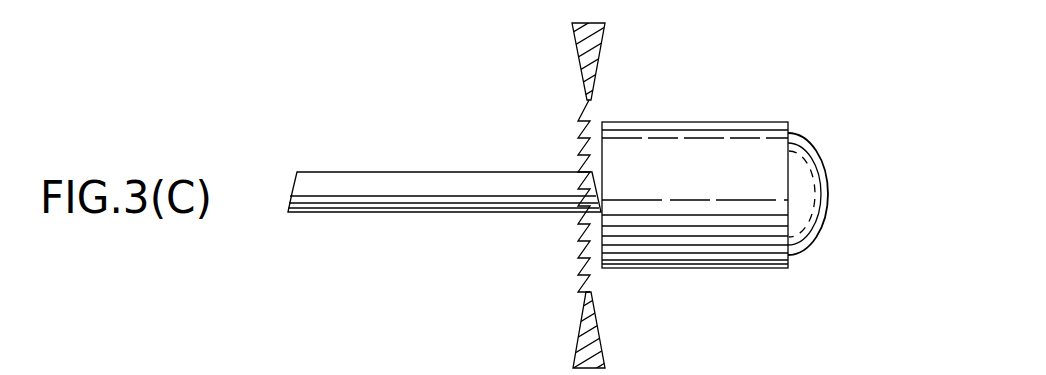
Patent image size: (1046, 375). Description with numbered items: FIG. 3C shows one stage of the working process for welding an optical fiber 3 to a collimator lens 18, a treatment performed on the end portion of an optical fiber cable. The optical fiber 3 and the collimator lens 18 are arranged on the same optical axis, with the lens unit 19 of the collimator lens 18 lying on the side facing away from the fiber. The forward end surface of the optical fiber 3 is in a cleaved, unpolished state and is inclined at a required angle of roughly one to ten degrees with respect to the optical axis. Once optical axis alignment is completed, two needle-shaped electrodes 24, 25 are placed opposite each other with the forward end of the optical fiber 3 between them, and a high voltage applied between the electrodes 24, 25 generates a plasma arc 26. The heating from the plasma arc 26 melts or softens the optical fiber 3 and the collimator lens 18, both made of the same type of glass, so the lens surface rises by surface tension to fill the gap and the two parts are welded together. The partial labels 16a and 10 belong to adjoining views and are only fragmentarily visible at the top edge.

The optical fiber 3 is at (404, 171).
The electrode 24 is at (574, 46).
The electrode 25 is at (582, 330).
The plasma arc 26 is at (579, 256).
The collimator lens 18 is at (692, 121).
The lens unit 19 is at (811, 236).
The housing portion 16a is at (565, 5).
The optical connector 10 is at (893, 0).